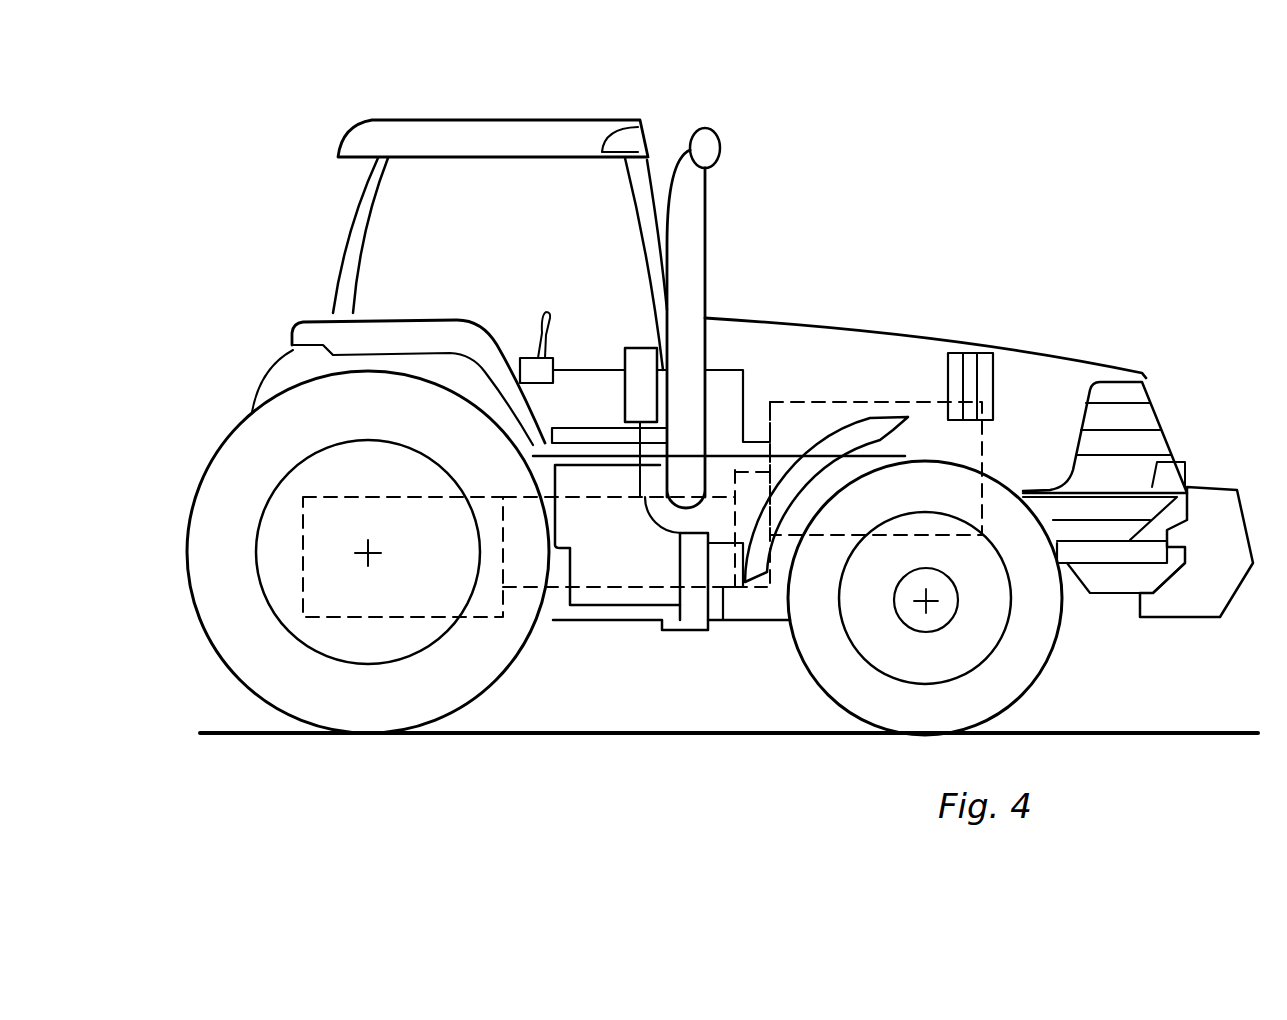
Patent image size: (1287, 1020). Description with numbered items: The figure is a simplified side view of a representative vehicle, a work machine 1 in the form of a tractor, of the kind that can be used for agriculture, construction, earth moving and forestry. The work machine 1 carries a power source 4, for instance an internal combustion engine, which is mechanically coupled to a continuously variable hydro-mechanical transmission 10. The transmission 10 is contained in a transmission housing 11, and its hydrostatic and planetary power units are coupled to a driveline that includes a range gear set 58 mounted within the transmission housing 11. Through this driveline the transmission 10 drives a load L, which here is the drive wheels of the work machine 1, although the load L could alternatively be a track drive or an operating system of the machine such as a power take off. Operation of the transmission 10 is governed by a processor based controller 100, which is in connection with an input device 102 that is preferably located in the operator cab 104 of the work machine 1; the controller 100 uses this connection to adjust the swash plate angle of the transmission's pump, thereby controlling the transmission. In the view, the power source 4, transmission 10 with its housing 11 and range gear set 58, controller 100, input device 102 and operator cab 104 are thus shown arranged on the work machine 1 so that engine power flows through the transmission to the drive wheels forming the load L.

The work machine 1 is at (1056, 241).
The power source 4 is at (863, 400).
The continuously variable hydro-mechanical transmission 10 is at (633, 588).
The transmission housing 11 is at (723, 590).
The range gear set 58 is at (390, 600).
The processor based controller 100 is at (637, 347).
The input device 102 is at (547, 313).
The operator cab 104 is at (517, 119).
The load L is at (206, 657).